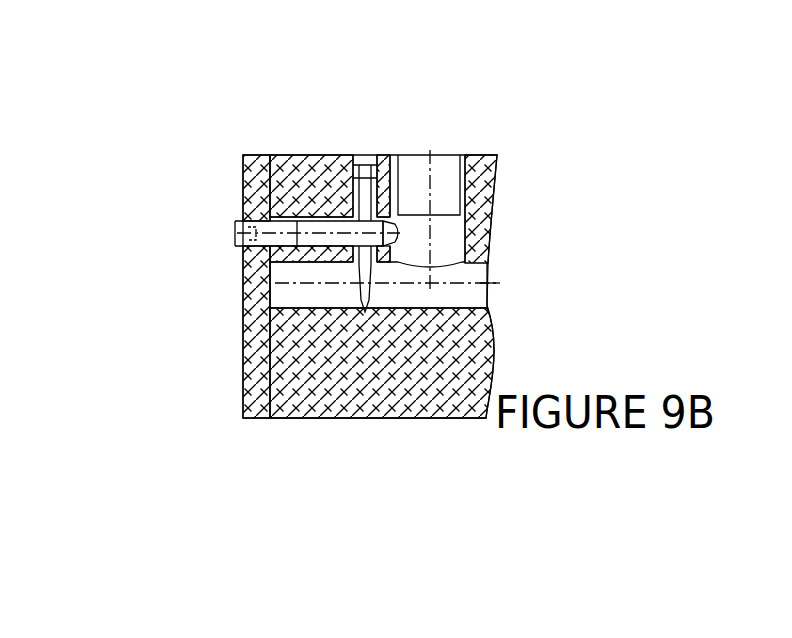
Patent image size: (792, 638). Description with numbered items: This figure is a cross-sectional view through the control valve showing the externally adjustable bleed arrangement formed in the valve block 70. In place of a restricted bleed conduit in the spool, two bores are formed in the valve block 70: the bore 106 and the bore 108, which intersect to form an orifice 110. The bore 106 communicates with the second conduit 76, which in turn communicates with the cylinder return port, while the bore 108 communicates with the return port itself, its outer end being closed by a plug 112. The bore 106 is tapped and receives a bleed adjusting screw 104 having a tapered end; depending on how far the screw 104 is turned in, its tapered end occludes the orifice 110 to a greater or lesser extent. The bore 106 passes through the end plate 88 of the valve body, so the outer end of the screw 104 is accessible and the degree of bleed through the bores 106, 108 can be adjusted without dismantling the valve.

The end plate 88 is at (243, 168).
The valve block 70 is at (485, 358).
The bore 108 is at (350, 275).
The bore 106 is at (394, 213).
The second conduit 76 is at (432, 155).
The bleed adjusting screw 104 is at (243, 250).
The plug 112 is at (363, 155).
The orifice 110 is at (358, 256).